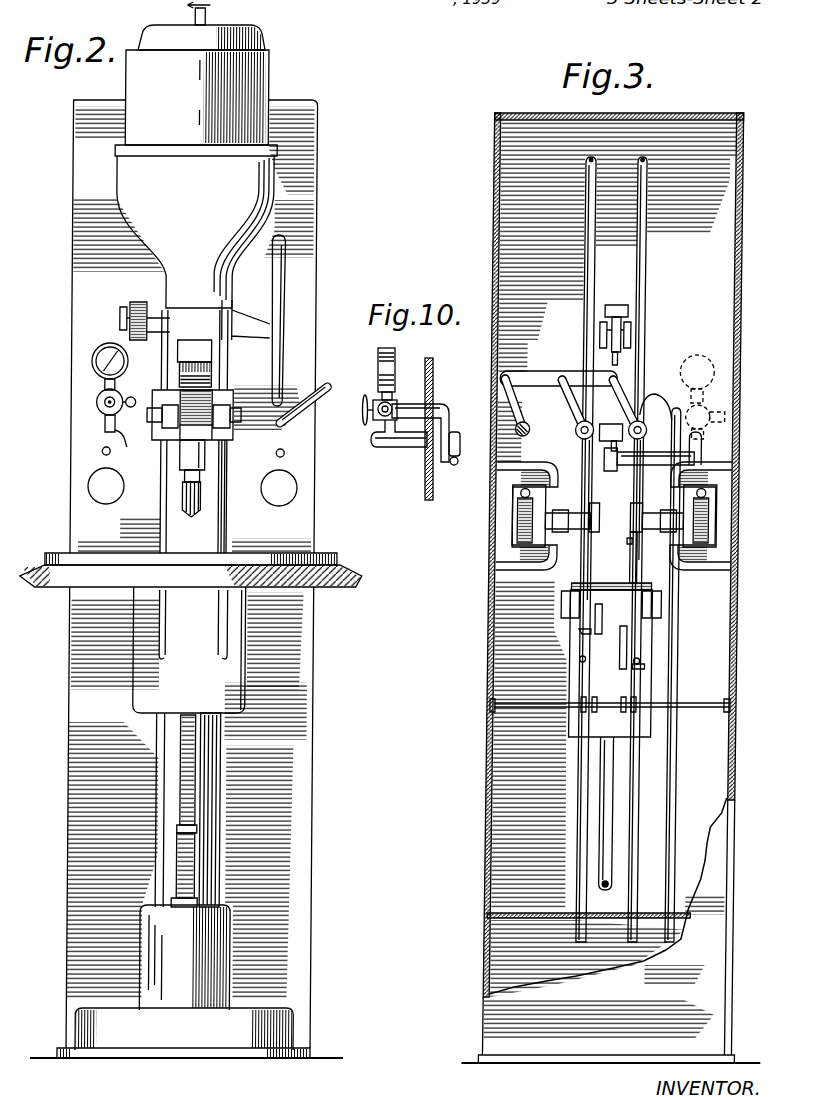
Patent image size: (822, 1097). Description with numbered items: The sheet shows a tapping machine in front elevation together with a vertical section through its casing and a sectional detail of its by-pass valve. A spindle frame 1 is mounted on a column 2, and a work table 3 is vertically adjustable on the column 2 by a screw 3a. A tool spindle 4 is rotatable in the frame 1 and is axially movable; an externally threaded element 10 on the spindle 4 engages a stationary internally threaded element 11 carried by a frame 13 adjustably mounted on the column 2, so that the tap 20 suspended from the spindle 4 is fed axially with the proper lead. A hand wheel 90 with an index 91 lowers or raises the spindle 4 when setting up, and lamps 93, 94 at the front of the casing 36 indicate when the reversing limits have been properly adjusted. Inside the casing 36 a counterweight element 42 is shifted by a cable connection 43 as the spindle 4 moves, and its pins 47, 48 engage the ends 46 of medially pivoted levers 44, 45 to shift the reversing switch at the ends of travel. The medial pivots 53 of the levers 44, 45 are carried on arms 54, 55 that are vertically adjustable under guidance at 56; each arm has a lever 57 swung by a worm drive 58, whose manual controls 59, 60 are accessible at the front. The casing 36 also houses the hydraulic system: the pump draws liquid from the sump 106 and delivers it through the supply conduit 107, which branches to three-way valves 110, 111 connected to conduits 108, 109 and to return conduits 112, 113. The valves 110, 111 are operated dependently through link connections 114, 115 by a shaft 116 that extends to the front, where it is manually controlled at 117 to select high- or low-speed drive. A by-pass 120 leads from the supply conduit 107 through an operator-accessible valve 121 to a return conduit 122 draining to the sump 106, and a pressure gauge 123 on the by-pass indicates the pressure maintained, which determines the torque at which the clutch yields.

In FIG. 2, the spindle frame 1 is at (252, 193).
In FIG. 2, the column 2 is at (209, 760).
In FIG. 2, the work table 3 is at (279, 571).
In FIG. 2, the screw 3a is at (197, 814).
In FIG. 2, the tool spindle 4 is at (176, 473).
In FIG. 2, the externally threaded element 10 is at (213, 384).
In FIG. 2, the stationary element 11 is at (220, 432).
In FIG. 2, the frame 13 is at (171, 441).
In FIG. 2, the tapping tool 20 is at (205, 497).
In FIG. 2, the casing 36 is at (315, 219).
In FIG. 10, the casing 36 is at (434, 372).
In FIG. 3, the casing 36 is at (708, 237).
In FIG. 3, the element (counterweight) 42 is at (653, 729).
In FIG. 3, the cable connection 43 is at (627, 310).
In FIG. 3, the lever 44 is at (599, 619).
In FIG. 3, the lever 45 is at (623, 661).
In FIG. 3, the ends of the levers 46 is at (582, 633).
In FIG. 3, the pin 47 is at (580, 661).
In FIG. 3, the pin 48 is at (642, 661).
In FIG. 3, the medial pivots 53 is at (575, 619).
In FIG. 3, the arm 54 is at (608, 543).
In FIG. 3, the arm 55 is at (637, 577).
In FIG. 3, the guide 56 is at (584, 714).
In FIG. 3, the lever 57 is at (588, 506).
In FIG. 3, the worm drive 58 is at (520, 509).
In FIG. 2, the manual control 59 is at (297, 490).
In FIG. 2, the manual control 60 is at (109, 505).
In FIG. 2, the hand wheel 90 is at (283, 294).
In FIG. 2, the index 91 is at (137, 304).
In FIG. 2, the electric lamp 93 is at (284, 453).
In FIG. 2, the electric lamp 94 is at (101, 452).
In FIG. 3, the sump 106 is at (512, 945).
In FIG. 3, the supply conduit 107 is at (587, 562).
In FIG. 3, the conduit 108 is at (580, 331).
In FIG. 3, the conduit 109 is at (642, 334).
In FIG. 3, the three-way valve 110 is at (579, 440).
In FIG. 3, the three-way valve 111 is at (677, 407).
In FIG. 3, the return conduit 112 is at (583, 479).
In FIG. 3, the return conduit 113 is at (640, 491).
In FIG. 3, the link connection 114 is at (531, 380).
In FIG. 3, the link connection 115 is at (571, 404).
In FIG. 10, the shaft 116 is at (472, 449).
In FIG. 3, the shaft 116 is at (514, 434).
In FIG. 2, the manual control 117 is at (327, 394).
In FIG. 2, the by-pass 120 is at (127, 441).
In FIG. 10, the by-pass 120 is at (412, 445).
In FIG. 3, the by-pass 120 is at (702, 460).
In FIG. 2, the valve 121 is at (95, 401).
In FIG. 10, the valve 121 is at (378, 420).
In FIG. 3, the valve 121 is at (735, 411).
In FIG. 2, the return conduit 122 is at (139, 390).
In FIG. 10, the return conduit 122 is at (440, 408).
In FIG. 3, the return conduit 122 is at (688, 417).
In FIG. 2, the pressure gauge 123 is at (90, 357).
In FIG. 10, the pressure gauge 123 is at (393, 364).
In FIG. 3, the pressure gauge 123 is at (727, 358).